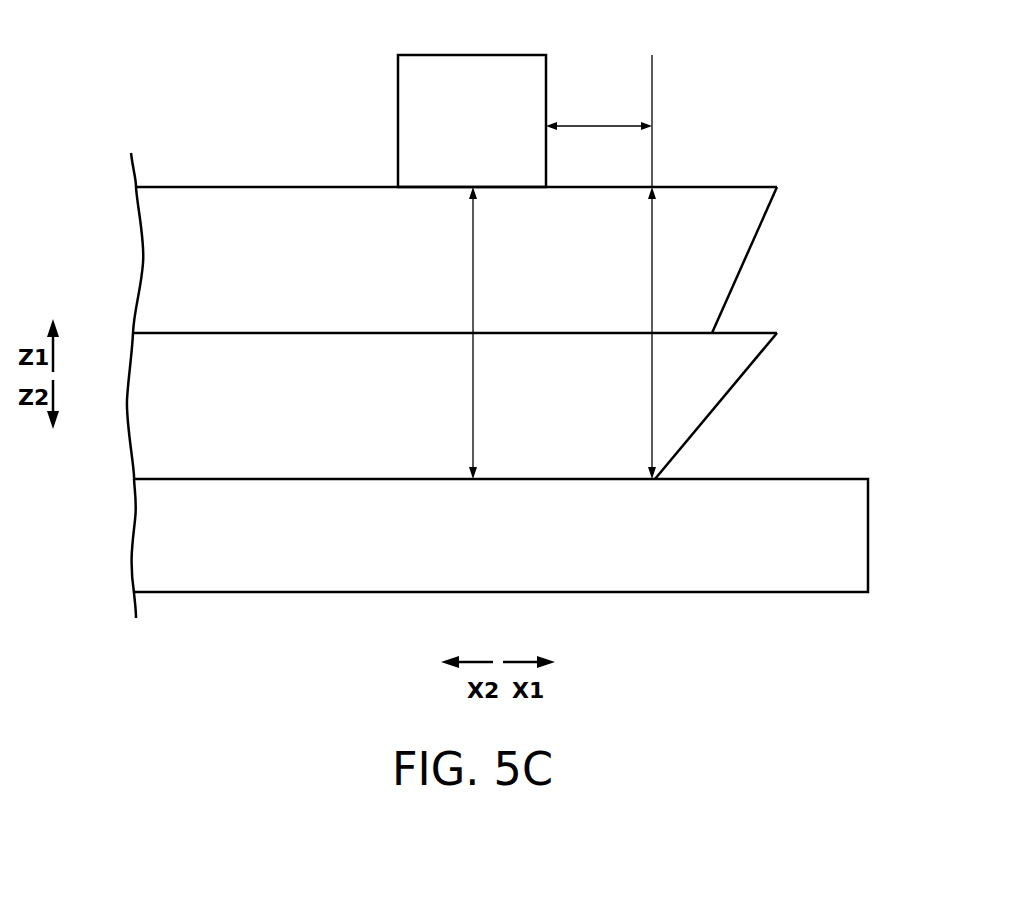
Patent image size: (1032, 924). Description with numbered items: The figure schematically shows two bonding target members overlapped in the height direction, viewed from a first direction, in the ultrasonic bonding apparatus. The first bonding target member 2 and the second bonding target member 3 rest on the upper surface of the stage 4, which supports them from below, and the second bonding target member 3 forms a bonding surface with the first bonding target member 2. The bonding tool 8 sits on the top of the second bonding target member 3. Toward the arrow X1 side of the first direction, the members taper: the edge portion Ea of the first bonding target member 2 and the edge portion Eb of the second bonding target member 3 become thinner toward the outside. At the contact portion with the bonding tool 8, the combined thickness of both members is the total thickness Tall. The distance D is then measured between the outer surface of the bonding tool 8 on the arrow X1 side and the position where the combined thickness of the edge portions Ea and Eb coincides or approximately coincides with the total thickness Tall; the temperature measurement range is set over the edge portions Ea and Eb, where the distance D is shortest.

The first bonding target member 2 is at (753, 343).
The second bonding target member 3 is at (728, 195).
The stage 4 is at (868, 535).
The bonding tool 8 is at (466, 57).
The edge portion of the first bonding target member Ea is at (720, 402).
The edge portion of the second bonding target member Eb is at (752, 238).
The distance D is at (599, 121).
The total thickness of the contact portion Tall is at (541, 333).